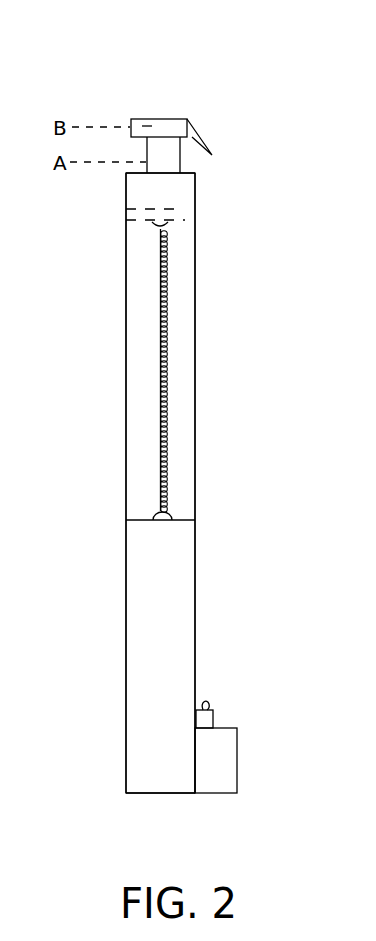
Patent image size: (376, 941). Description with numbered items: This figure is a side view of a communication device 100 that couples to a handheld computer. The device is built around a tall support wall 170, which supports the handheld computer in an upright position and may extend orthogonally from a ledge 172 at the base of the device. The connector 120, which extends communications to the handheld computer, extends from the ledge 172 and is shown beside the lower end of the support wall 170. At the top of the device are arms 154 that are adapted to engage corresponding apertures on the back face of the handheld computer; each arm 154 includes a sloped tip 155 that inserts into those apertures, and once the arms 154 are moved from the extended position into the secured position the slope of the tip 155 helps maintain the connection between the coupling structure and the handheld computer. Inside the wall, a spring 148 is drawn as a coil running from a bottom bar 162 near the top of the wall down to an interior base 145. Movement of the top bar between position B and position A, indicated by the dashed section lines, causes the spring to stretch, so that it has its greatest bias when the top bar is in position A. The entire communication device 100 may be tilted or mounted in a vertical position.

The communication device 100 is at (106, 649).
The connector 120 is at (233, 704).
The interior base 145 is at (163, 521).
The spring 148 is at (162, 316).
The arms 154 is at (174, 107).
The sloped tip 155 is at (199, 133).
The bottom bar 162 is at (187, 217).
The support wall 170 is at (197, 393).
The ledge 172 is at (226, 727).